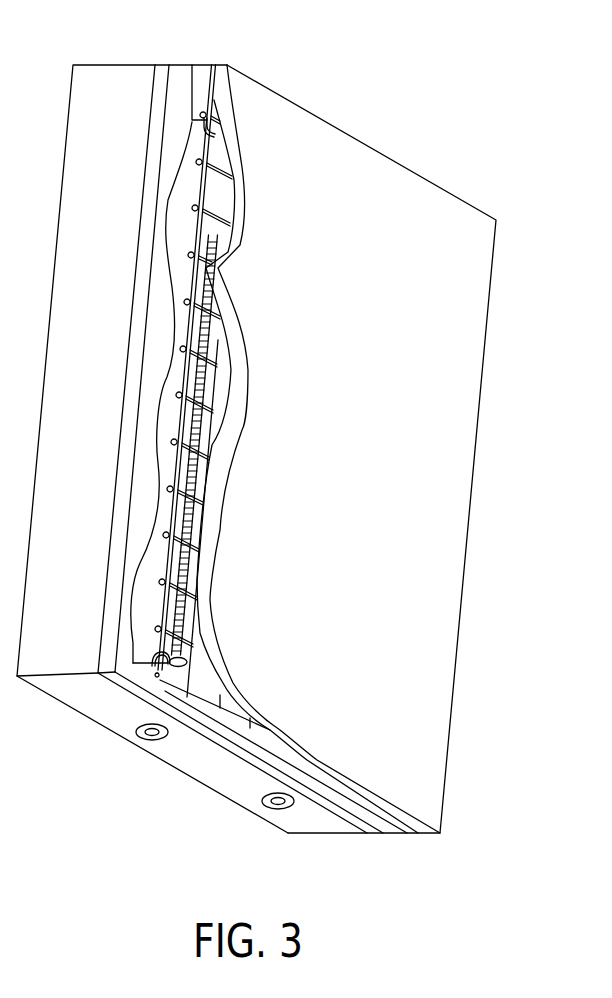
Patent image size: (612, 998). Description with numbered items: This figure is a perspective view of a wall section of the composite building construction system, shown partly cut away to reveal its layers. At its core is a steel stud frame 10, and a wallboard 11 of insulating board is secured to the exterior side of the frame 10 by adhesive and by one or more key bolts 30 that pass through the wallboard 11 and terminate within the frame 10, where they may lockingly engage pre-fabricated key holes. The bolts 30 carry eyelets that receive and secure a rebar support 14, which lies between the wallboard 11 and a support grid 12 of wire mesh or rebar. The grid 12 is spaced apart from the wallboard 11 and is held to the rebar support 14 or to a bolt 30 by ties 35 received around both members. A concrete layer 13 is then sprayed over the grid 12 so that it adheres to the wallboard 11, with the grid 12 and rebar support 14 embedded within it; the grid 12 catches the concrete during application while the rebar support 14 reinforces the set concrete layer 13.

The frame 10 is at (96, 370).
The wallboard 11 is at (158, 73).
The support grid 12 is at (157, 676).
The concrete layer 13 is at (197, 80).
The rebar support 14 is at (210, 388).
The key bolt 30 is at (195, 126).
The tie 35 is at (212, 138).